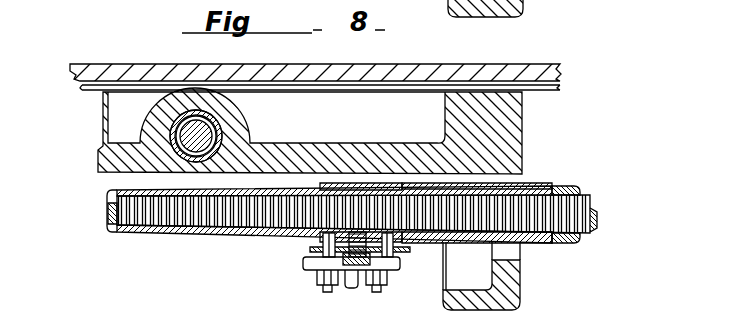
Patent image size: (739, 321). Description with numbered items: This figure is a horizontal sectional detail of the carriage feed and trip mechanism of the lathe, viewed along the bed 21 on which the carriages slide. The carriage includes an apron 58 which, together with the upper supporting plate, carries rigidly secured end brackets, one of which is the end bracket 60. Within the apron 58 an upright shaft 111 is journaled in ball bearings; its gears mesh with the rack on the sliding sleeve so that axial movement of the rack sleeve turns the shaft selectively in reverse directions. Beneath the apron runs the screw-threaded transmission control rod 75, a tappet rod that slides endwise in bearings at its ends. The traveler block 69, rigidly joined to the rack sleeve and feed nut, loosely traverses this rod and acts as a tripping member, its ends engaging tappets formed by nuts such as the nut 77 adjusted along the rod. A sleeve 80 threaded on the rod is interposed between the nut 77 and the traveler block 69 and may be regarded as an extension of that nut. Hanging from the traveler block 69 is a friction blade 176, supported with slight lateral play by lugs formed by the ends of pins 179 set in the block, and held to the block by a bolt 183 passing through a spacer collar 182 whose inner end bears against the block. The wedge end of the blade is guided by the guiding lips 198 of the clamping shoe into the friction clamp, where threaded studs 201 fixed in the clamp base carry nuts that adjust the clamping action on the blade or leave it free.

The bed 21 is at (538, 70).
The apron 58 is at (383, 153).
The end bracket 60 is at (522, 299).
The traveler block 69 is at (321, 186).
The transmission control rod 75 is at (597, 222).
The nut 77 is at (558, 244).
The sleeve 80 is at (463, 243).
The upright shaft 111 is at (214, 134).
The friction blade 176 is at (310, 250).
The pins 179 is at (395, 243).
The spacer collar 182 is at (342, 255).
The bolt 183 is at (400, 264).
The guiding lips 198 is at (302, 267).
The threaded studs 201 is at (378, 291).